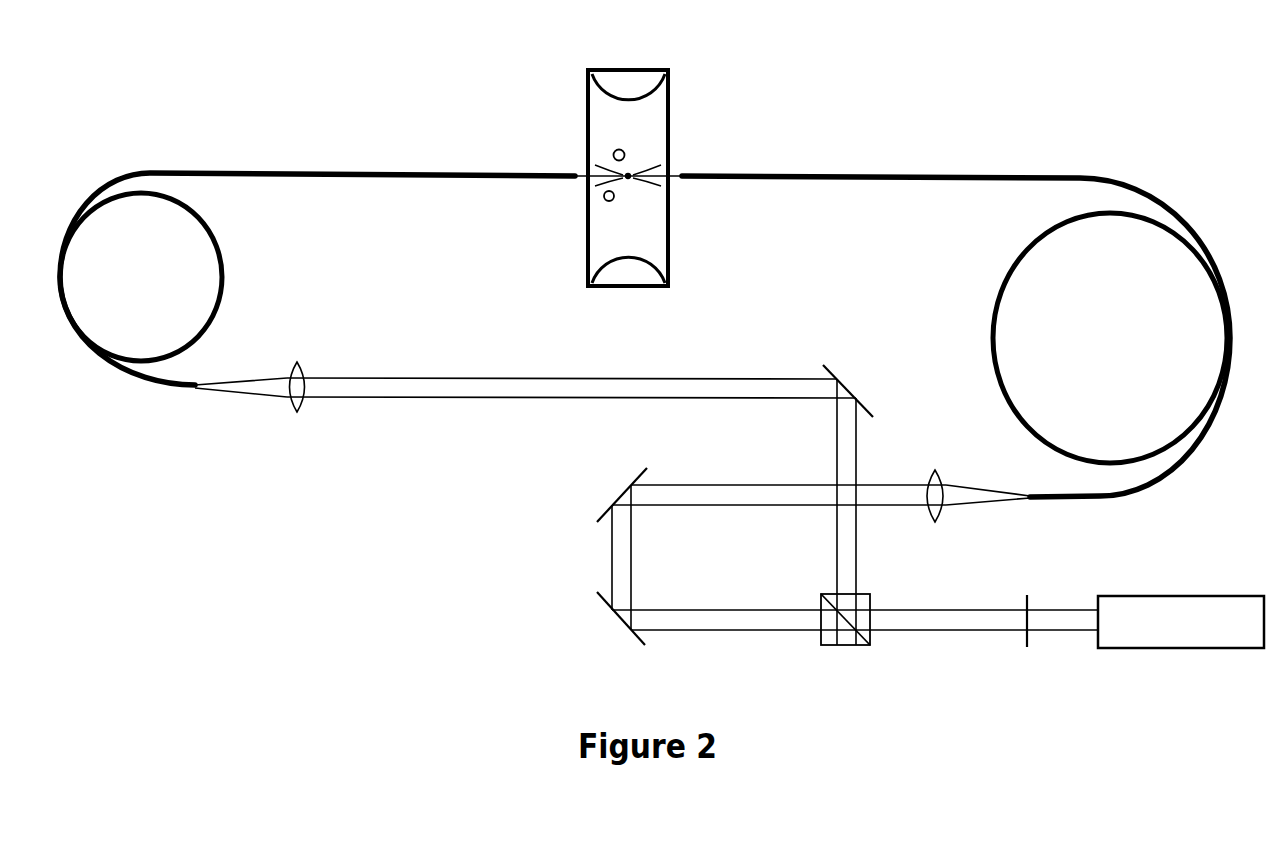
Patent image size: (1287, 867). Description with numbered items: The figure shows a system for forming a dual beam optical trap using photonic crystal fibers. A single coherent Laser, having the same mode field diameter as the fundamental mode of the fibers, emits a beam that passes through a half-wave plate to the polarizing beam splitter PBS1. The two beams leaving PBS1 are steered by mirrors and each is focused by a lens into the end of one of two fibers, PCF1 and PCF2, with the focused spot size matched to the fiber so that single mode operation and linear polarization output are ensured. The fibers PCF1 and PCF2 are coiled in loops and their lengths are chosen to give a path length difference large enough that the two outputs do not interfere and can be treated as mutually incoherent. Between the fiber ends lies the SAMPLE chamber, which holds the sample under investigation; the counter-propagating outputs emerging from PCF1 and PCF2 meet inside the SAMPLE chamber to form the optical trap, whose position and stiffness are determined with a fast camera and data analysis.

The sample chamber SAMPLE is at (637, 161).
The first photonic crystal fiber PCF1 is at (317, 262).
The second photonic crystal fiber PCF2 is at (956, 319).
The polarizing beam splitter PBS1 is at (862, 604).
The coherent laser Laser is at (1181, 622).